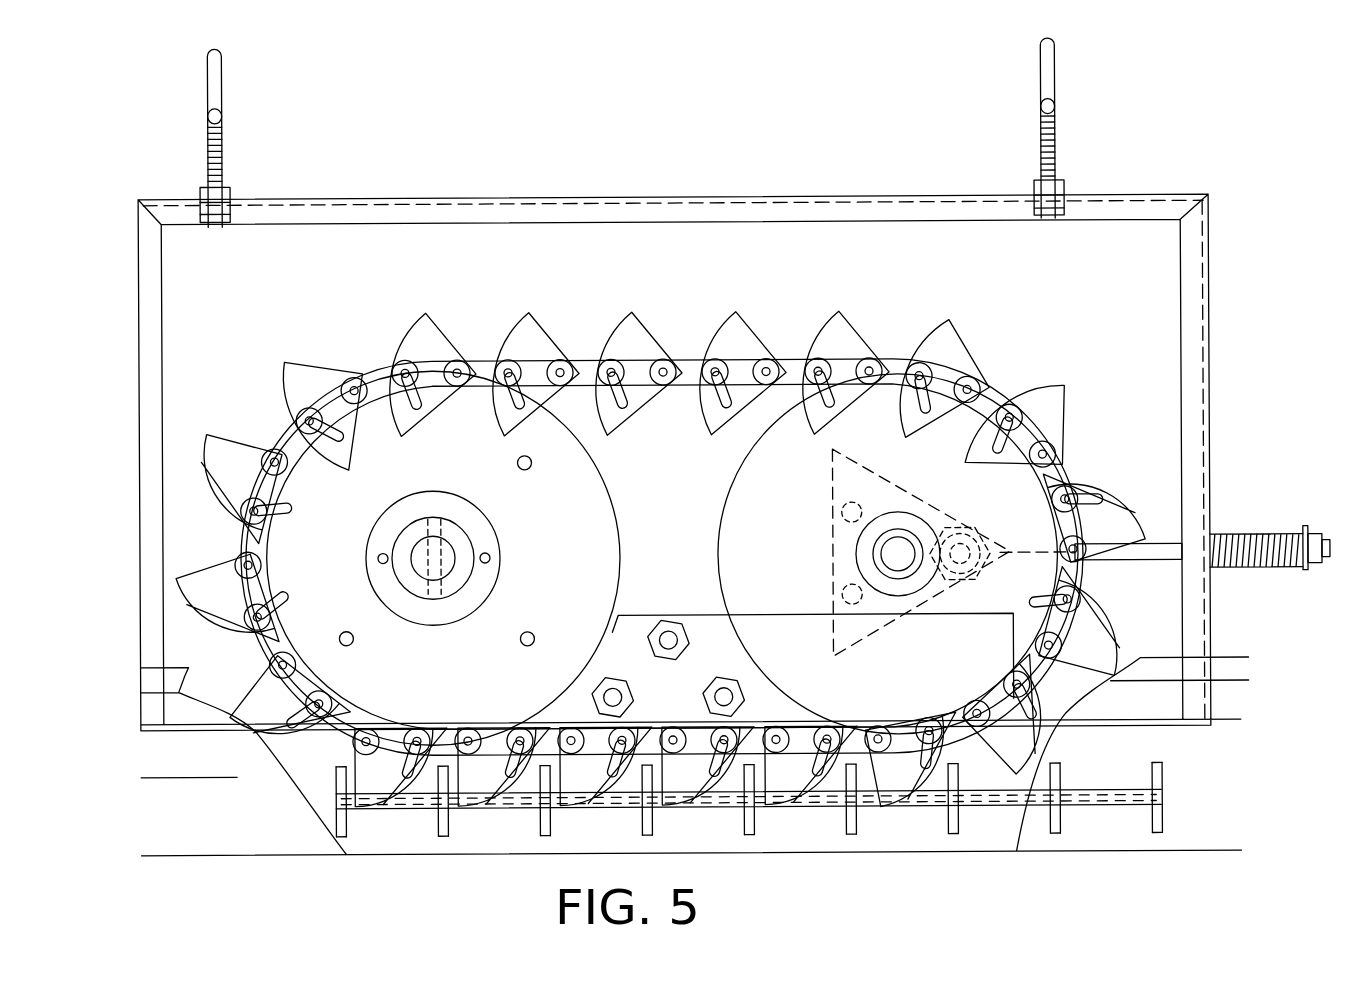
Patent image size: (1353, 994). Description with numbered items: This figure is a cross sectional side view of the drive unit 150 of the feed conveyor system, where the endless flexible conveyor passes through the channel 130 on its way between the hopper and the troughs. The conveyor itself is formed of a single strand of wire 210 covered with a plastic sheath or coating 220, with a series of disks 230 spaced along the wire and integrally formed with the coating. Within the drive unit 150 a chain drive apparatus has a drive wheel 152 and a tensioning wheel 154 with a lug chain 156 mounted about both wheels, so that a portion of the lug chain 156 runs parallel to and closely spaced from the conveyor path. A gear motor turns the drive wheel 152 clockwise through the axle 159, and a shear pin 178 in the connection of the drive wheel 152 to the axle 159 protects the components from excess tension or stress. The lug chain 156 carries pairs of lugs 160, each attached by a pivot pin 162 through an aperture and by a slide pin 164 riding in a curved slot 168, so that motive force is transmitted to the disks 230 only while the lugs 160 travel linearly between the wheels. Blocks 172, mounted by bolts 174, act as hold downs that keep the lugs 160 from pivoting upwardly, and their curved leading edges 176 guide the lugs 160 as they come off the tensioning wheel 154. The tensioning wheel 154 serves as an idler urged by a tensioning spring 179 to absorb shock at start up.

The channel or transport tube 130 is at (1133, 852).
The drive unit 150 is at (1229, 251).
The drive wheel 152 is at (622, 503).
The tensioning wheel 154 is at (723, 492).
The lug chain 156 is at (697, 358).
The axle 159 is at (452, 565).
The lug 160 is at (846, 336).
The pivot pin 162 is at (1056, 452).
The slide pin 164 is at (1013, 398).
The curved slot 168 is at (1016, 418).
The block 172 is at (757, 615).
The bolt 174 is at (680, 640).
The curved leading edge 176 is at (996, 672).
The shear pin 178 is at (455, 528).
The tensioning spring 179 is at (1250, 540).
The wire 210 is at (977, 815).
The sheath or coating 220 is at (1017, 812).
The disks 230 is at (940, 822).